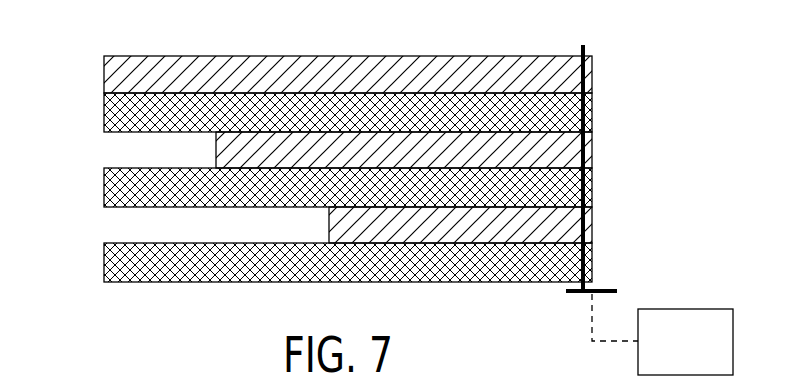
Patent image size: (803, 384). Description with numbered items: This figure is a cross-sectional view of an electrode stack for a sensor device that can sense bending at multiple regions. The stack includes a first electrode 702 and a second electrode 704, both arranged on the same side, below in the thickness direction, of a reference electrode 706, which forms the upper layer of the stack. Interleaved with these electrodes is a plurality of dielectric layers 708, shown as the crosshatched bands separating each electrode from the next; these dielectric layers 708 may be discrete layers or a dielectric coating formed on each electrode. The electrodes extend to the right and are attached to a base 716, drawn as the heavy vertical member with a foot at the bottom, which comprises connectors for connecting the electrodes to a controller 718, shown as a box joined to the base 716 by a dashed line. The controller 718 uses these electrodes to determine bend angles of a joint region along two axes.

The first electrode 702 is at (216, 150).
The second electrode 704 is at (329, 225).
The reference electrode 706 is at (104, 110).
The dielectric layers 708 is at (104, 73).
The base 716 is at (601, 287).
The controller 718 is at (704, 353).